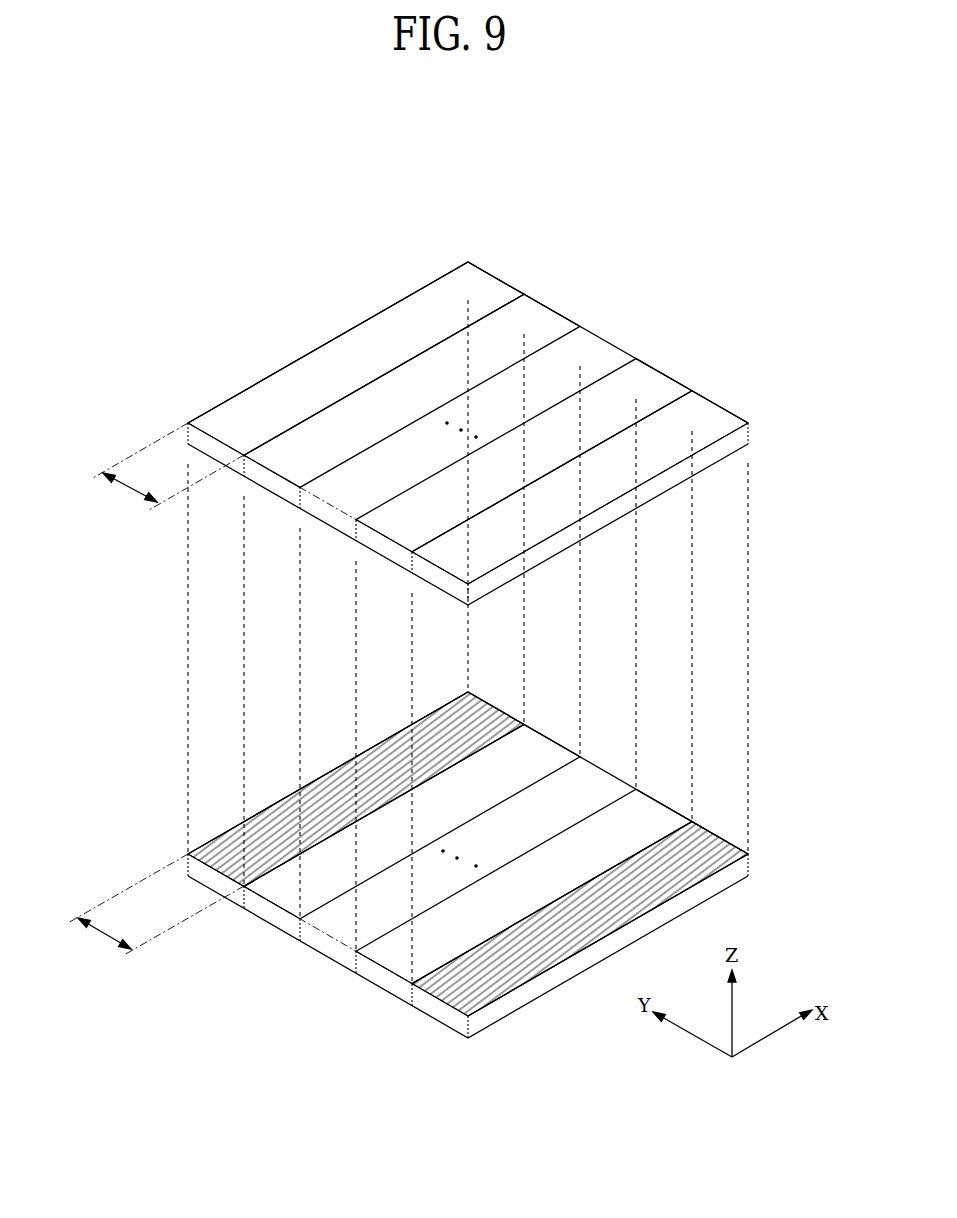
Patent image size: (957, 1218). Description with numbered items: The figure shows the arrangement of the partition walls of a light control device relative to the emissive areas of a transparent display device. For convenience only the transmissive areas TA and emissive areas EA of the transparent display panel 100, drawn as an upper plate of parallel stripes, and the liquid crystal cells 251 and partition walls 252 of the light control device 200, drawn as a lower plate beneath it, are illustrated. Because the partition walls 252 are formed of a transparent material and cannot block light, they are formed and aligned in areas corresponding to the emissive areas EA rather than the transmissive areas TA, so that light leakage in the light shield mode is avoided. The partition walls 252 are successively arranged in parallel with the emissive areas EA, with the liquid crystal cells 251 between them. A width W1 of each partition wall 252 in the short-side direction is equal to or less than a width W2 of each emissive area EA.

The transparent display panel 100 is at (479, 411).
The light control device 200 is at (464, 868).
The liquid crystal cells 251 is at (293, 895).
The partition walls 252 is at (207, 868).
The emissive area EA is at (486, 282).
The transmissive area TA is at (541, 318).
The width of partition wall W1 is at (154, 910).
The width of emissive area W2 is at (168, 470).